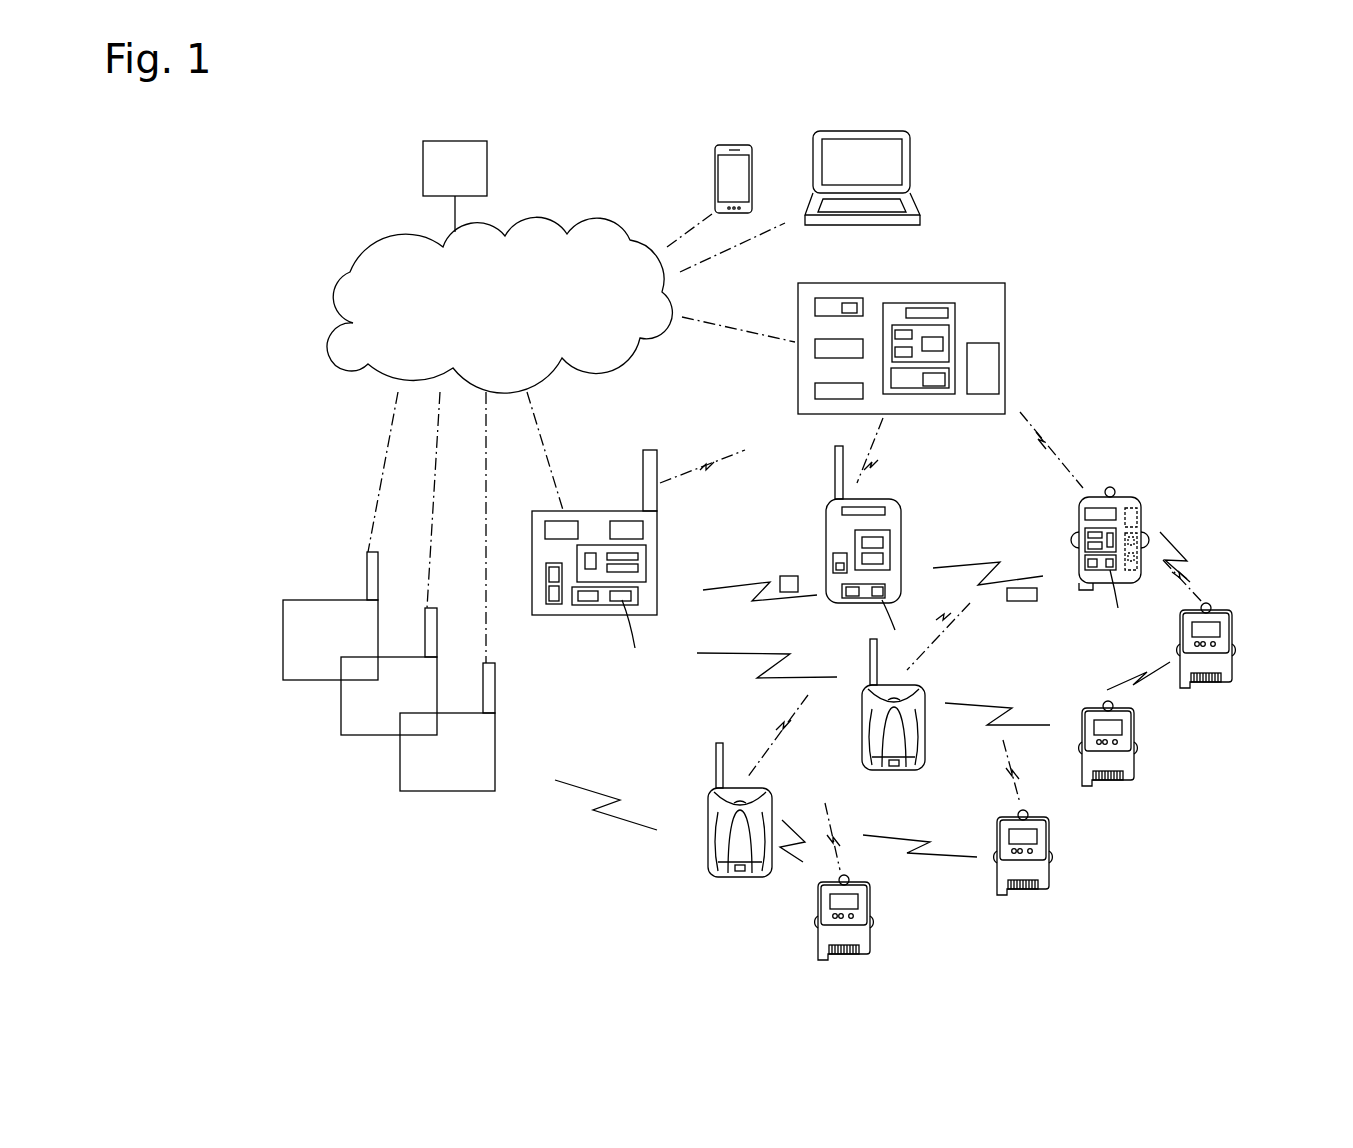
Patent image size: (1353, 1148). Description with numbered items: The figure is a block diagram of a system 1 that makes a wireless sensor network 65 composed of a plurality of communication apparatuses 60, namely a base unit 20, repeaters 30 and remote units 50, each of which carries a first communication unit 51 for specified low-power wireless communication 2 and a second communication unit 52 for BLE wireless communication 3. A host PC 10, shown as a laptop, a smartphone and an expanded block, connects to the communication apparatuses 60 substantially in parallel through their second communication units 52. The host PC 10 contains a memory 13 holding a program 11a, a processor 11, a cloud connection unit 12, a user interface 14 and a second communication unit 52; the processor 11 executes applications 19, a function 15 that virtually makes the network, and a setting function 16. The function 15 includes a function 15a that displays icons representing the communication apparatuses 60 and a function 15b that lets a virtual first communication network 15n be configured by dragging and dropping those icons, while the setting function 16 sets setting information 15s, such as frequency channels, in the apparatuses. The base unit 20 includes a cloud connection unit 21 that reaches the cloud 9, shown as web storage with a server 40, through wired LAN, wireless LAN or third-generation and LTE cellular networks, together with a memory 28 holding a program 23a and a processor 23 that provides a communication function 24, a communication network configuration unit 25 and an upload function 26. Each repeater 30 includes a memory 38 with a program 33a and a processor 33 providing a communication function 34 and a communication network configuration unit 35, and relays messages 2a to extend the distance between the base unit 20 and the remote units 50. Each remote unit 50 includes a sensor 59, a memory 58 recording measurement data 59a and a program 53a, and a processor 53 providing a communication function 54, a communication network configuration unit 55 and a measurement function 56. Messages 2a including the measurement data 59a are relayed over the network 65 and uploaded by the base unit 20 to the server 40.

The system 1 is at (1110, 340).
The specified low-power wireless communication 2 is at (723, 677).
The communication message 2a is at (789, 584).
The wireless communication 3 is at (732, 453).
The cloud 9 is at (345, 368).
The host PC 10 is at (712, 168).
The processor 11 is at (898, 311).
The program 11a is at (848, 303).
The cloud connection unit 12 is at (830, 348).
The memory 13 is at (830, 306).
The user interface 14 is at (985, 350).
The function that makes a communication network 15 is at (948, 333).
The icon display function 15a is at (900, 334).
The drag-and-drop configuration function 15b is at (900, 352).
The virtual first communication network 15n is at (940, 347).
The setting information 15s is at (934, 389).
The setting function 16 is at (950, 383).
The applications 19 is at (935, 312).
The base unit 20 is at (290, 670).
The cloud connection unit 21 is at (561, 530).
The processor 23 is at (638, 596).
The program 23a is at (553, 601).
The communication function 24 is at (636, 557).
The communication network configuration unit 25 is at (636, 569).
The upload function 26 is at (591, 555).
The memory 28 is at (550, 593).
The repeater 30 is at (902, 499).
The processor 33 is at (891, 535).
The program 33a is at (836, 566).
The communication function 34 is at (883, 543).
The communication network configuration unit 35 is at (883, 559).
The memory 38 is at (834, 558).
The server 40 is at (490, 166).
The remote unit 50 is at (1142, 498).
The first communication unit 51 is at (613, 600).
The second communication unit 52 is at (823, 400).
The processor 53 is at (1085, 541).
The program 53a is at (1137, 565).
The communication function 54 is at (1088, 534).
The communication network configuration unit 55 is at (1088, 546).
The measurement function 56 is at (1110, 533).
The memory 58 is at (1137, 552).
The sensor 59 is at (1137, 516).
The measurement data 59a is at (550, 574).
The communication apparatus 60 is at (1232, 502).
The wireless sensor network 65 is at (549, 843).